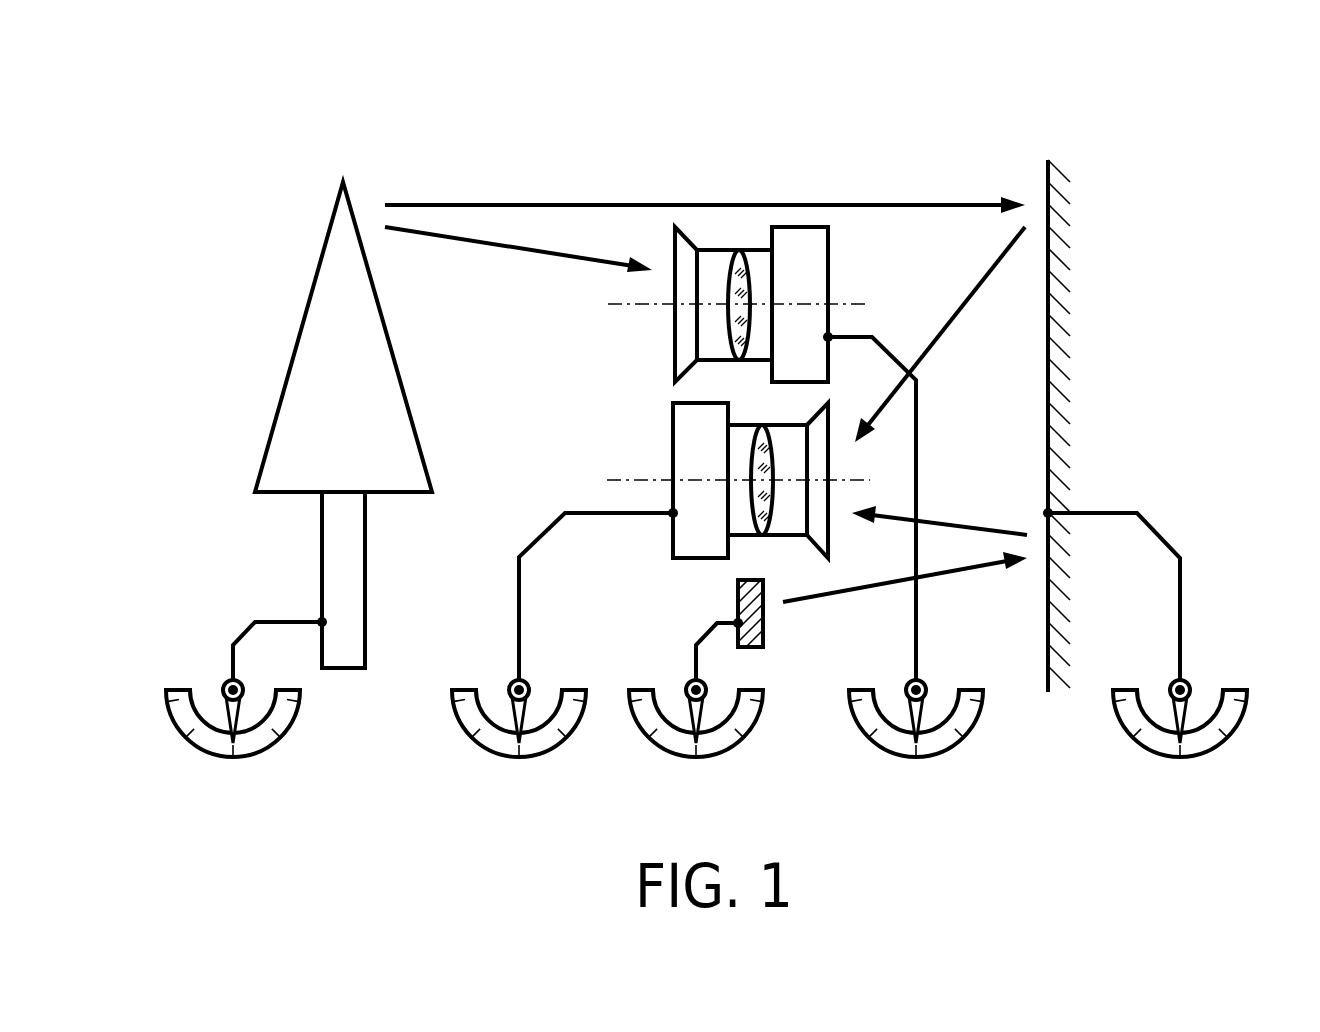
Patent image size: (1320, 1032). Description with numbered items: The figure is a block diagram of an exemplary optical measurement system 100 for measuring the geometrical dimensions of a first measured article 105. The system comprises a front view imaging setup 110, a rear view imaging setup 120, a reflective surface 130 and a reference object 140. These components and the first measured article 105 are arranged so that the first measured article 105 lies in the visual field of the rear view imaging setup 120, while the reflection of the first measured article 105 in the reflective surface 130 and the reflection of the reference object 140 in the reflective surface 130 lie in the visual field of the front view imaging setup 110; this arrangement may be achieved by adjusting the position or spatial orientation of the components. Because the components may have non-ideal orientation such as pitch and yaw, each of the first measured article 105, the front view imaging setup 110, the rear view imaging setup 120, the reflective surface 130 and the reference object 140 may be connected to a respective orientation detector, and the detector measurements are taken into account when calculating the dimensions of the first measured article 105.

The optical measurement system 100 is at (272, 76).
The first measured article 105 is at (387, 403).
The front view imaging setup 110 is at (696, 447).
The rear view imaging setup 120 is at (806, 271).
The reflective surface 130 is at (1048, 292).
The reference object 140 is at (750, 635).